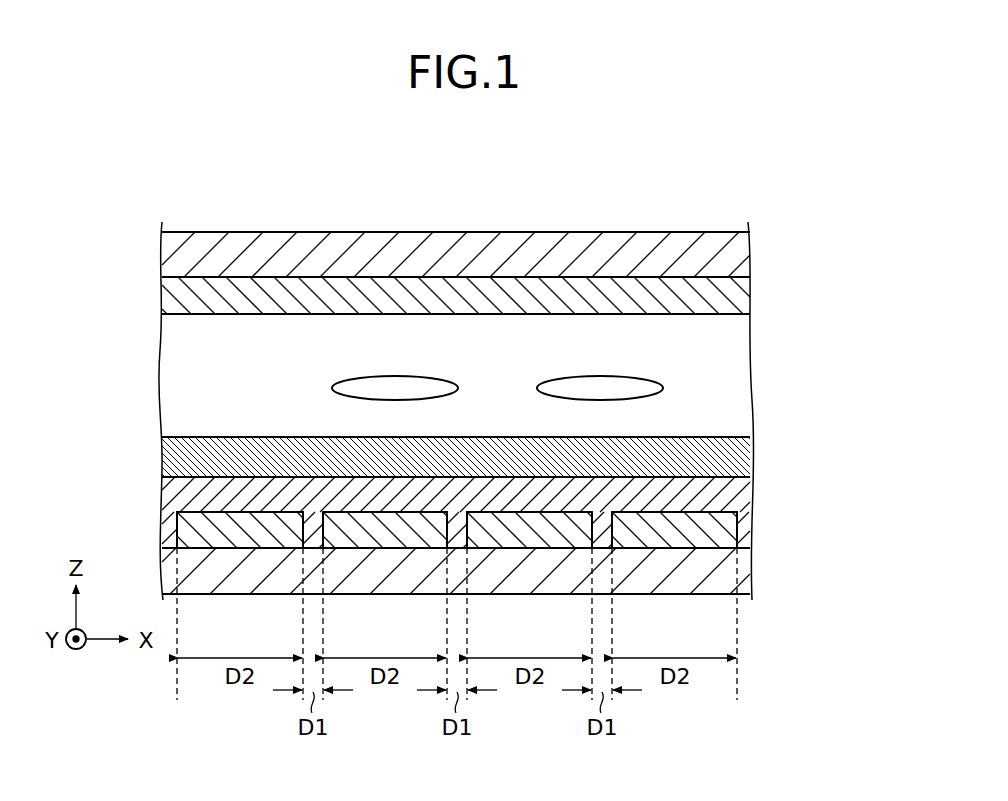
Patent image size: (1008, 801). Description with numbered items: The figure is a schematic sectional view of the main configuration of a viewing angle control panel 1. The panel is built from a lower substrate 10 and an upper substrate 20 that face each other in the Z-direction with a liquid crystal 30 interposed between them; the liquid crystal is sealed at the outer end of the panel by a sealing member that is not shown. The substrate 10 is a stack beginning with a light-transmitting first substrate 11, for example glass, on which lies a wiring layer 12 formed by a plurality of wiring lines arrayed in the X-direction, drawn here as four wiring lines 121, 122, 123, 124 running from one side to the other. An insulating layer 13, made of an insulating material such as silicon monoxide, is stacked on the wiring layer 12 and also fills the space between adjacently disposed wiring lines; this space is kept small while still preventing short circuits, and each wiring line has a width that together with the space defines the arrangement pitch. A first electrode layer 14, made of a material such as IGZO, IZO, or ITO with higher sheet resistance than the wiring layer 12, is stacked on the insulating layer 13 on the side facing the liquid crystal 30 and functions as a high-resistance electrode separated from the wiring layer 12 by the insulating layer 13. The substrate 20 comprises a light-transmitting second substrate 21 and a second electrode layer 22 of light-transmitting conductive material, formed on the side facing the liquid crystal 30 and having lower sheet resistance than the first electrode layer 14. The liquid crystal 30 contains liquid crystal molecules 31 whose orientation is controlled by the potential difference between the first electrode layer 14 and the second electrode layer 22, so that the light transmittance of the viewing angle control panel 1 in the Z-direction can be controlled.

The viewing angle control panel 1 is at (781, 209).
The substrate 10 is at (826, 437).
The first substrate 11 is at (750, 565).
The wiring layer 12 is at (748, 533).
The wiring line 121 is at (243, 535).
The wiring line 122 is at (390, 535).
The wiring line 123 is at (533, 537).
The wiring line 124 is at (674, 537).
The insulating layer 13 is at (735, 497).
The first electrode layer 14 is at (735, 460).
The substrate 20 is at (826, 232).
The second substrate 21 is at (735, 252).
The second electrode layer 22 is at (735, 298).
The liquid crystal 30 is at (826, 316).
The liquid crystal molecule 31 is at (642, 383).